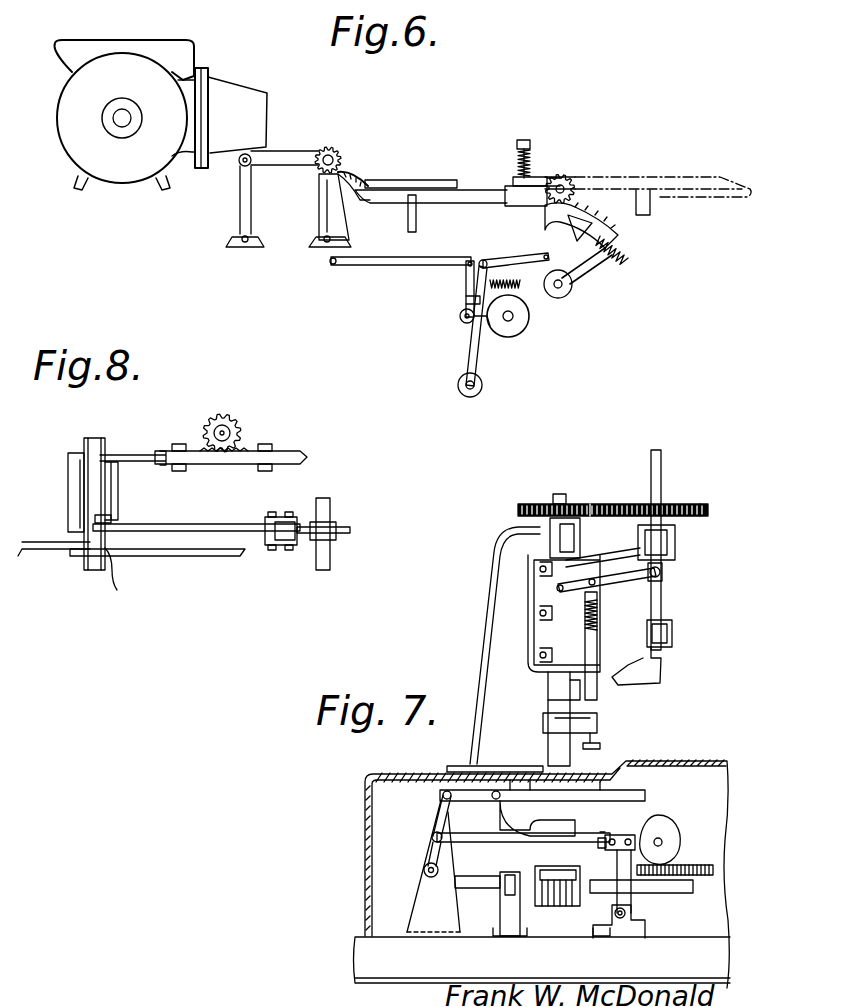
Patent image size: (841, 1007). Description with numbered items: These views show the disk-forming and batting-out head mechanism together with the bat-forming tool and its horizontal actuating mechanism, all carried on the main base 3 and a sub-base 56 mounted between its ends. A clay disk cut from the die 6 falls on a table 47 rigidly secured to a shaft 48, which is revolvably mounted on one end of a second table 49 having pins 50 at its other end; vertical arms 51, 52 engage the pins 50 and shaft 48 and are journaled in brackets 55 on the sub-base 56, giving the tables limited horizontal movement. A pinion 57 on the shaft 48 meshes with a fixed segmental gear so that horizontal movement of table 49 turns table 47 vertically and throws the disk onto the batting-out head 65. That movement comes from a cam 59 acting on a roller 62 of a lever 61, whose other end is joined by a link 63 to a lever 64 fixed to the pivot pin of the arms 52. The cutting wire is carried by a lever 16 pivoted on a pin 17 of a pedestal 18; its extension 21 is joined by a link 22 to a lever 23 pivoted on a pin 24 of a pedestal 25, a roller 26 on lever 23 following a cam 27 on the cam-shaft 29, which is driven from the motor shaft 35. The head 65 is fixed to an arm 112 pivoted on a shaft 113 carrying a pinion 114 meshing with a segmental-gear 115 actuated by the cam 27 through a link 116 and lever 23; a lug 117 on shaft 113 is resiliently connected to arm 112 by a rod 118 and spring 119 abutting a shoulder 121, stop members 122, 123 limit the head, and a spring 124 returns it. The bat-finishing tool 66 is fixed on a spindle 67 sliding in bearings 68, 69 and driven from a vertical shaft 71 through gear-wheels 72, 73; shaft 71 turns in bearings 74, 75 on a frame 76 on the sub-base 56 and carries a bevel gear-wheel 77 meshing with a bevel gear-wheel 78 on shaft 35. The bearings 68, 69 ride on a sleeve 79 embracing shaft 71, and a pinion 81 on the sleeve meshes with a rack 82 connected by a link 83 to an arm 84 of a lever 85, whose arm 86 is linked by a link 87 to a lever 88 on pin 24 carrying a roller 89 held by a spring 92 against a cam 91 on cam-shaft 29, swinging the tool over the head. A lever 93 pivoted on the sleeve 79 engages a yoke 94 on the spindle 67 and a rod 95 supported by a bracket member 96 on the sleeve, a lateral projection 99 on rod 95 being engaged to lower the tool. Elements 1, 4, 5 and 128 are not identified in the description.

In FIG. 6, the blower 1 is at (66, 112).
In FIG. 7, the main base 3 is at (395, 962).
In FIG. 6, the blower casing flange 4 is at (121, 42).
In FIG. 6, the blower outlet cone 5 is at (268, 110).
In FIG. 6, the die 6 is at (236, 92).
In FIG. 8, the lever 16 is at (30, 558).
In FIG. 8, the pin 17 is at (95, 437).
In FIG. 7, the pin 17 is at (431, 878).
In FIG. 8, the pedestal 18 is at (68, 492).
In FIG. 7, the pedestal 18 is at (420, 912).
In FIG. 8, the extension 21 is at (118, 586).
In FIG. 6, the link 22 is at (481, 258).
In FIG. 8, the link 22 is at (166, 556).
In FIG. 6, the lever 23 is at (478, 358).
In FIG. 6, the pin 24 is at (469, 397).
In FIG. 7, the pin 24 is at (626, 913).
In FIG. 7, the pedestal 25 is at (632, 928).
In FIG. 6, the roller 26 is at (488, 326).
In FIG. 6, the cam 27 is at (531, 316).
In FIG. 6, the cam-shaft 29 is at (512, 320).
In FIG. 8, the cam-shaft 29 is at (331, 553).
In FIG. 7, the cam-shaft 29 is at (663, 842).
In FIG. 7, the shaft 35 is at (480, 888).
In FIG. 6, the table 47 is at (290, 150).
In FIG. 6, the shaft 48 is at (331, 148).
In FIG. 6, the second table 49 is at (283, 167).
In FIG. 6, the pins 50 is at (240, 166).
In FIG. 6, the vertical arm 51 is at (240, 198).
In FIG. 6, the vertical arm 52 is at (318, 200).
In FIG. 6, the brackets 55 is at (240, 250).
In FIG. 7, the sub-base 56 is at (703, 760).
In FIG. 6, the pinion 57 is at (343, 158).
In FIG. 6, the cam 59 is at (466, 301).
In FIG. 6, the lever 61 is at (466, 286).
In FIG. 6, the roller 62 is at (460, 317).
In FIG. 6, the link 63 is at (374, 266).
In FIG. 6, the lever 64 is at (326, 264).
In FIG. 6, the batting-out head 65 is at (413, 182).
In FIG. 7, the bat-finishing tool 66 is at (661, 672).
In FIG. 7, the spindle 67 is at (661, 452).
In FIG. 7, the bearing 68 is at (676, 545).
In FIG. 7, the bearing 69 is at (673, 628).
In FIG. 8, the driving shaft 71 is at (212, 426).
In FIG. 7, the driving shaft 71 is at (560, 494).
In FIG. 7, the gear-wheel 72 is at (523, 504).
In FIG. 7, the gear-wheel 73 is at (698, 504).
In FIG. 7, the bearing 74 is at (600, 504).
In FIG. 7, the bearing 75 is at (585, 702).
In FIG. 7, the supporting frame 76 is at (492, 631).
In FIG. 7, the bevel gear-wheel 77 is at (578, 894).
In FIG. 7, the bevel gear-wheel 78 is at (522, 900).
In FIG. 7, the sleeve 79 is at (536, 600).
In FIG. 8, the pinion 81 is at (240, 424).
In FIG. 7, the pinion 81 is at (598, 814).
In FIG. 8, the rack 82 is at (228, 466).
In FIG. 7, the rack 82 is at (646, 794).
In FIG. 8, the link 83 is at (130, 452).
In FIG. 7, the link 83 is at (470, 800).
In FIG. 8, the arm 84 is at (116, 466).
In FIG. 7, the arm 84 is at (438, 810).
In FIG. 8, the lever 85 is at (80, 496).
In FIG. 7, the lever 85 is at (440, 852).
In FIG. 8, the arm 86 is at (112, 520).
In FIG. 7, the arm 86 is at (431, 837).
In FIG. 8, the link 87 is at (170, 526).
In FIG. 7, the link 87 is at (500, 842).
In FIG. 8, the lever 88 is at (282, 545).
In FIG. 7, the lever 88 is at (605, 845).
In FIG. 8, the roller 89 is at (292, 518).
In FIG. 7, the roller 89 is at (625, 834).
In FIG. 8, the cam 91 is at (350, 530).
In FIG. 7, the cam 91 is at (678, 826).
In FIG. 7, the spring 92 is at (700, 870).
In FIG. 7, the lever 93 is at (606, 578).
In FIG. 7, the yoke 94 is at (662, 572).
In FIG. 7, the rod 95 is at (598, 614).
In FIG. 7, the bracket member 96 is at (598, 728).
In FIG. 7, the lateral projection 99 is at (601, 746).
In FIG. 6, the arm 112 is at (470, 198).
In FIG. 6, the shaft 113 is at (566, 184).
In FIG. 6, the pinion 114 is at (588, 204).
In FIG. 6, the segmental-gear 115 is at (600, 212).
In FIG. 6, the link 116 is at (522, 256).
In FIG. 6, the lug 117 is at (542, 178).
In FIG. 6, the rod 118 is at (525, 138).
In FIG. 6, the spring 119 is at (518, 158).
In FIG. 6, the shoulder 121 is at (532, 152).
In FIG. 6, the stop member 122 is at (652, 198).
In FIG. 6, the stop member 123 is at (408, 217).
In FIG. 6, the spring 124 is at (603, 255).
In FIG. 6, the spring 128 is at (518, 280).